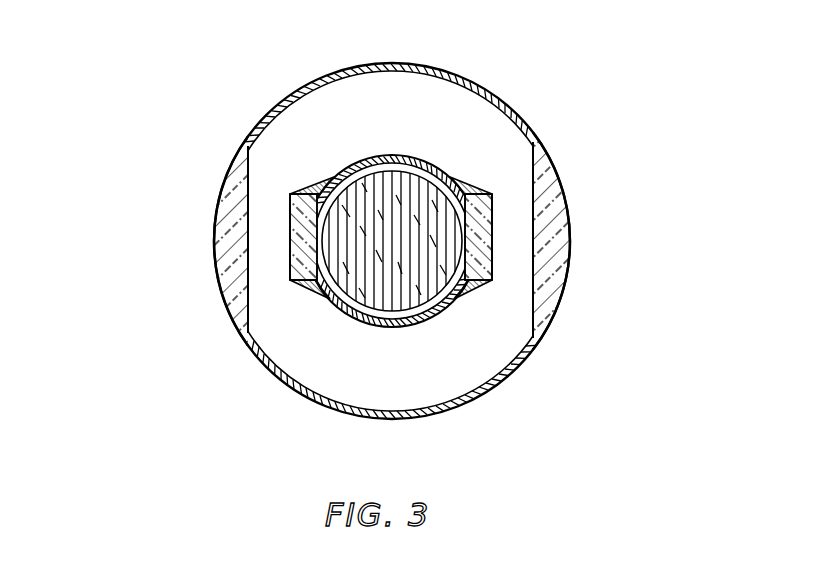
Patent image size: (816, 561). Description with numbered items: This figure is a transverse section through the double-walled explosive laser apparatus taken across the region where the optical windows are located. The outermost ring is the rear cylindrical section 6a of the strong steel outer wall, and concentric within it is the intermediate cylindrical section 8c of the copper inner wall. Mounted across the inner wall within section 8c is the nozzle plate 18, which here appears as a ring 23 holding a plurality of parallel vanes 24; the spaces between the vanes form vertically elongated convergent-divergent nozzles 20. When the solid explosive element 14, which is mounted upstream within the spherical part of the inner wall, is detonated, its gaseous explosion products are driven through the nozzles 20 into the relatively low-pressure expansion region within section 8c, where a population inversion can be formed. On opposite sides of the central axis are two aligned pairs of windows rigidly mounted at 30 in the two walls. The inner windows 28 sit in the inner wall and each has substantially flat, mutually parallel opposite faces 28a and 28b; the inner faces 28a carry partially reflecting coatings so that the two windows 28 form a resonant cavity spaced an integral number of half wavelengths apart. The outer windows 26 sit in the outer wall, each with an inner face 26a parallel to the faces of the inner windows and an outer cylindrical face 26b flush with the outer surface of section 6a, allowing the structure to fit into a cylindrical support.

The rear cylindrical section 6a is at (314, 76).
The solid explosive element 14 is at (374, 219).
The nozzle plate 18 is at (397, 330).
The convergent-divergent nozzle 20 is at (390, 176).
The ring 23 is at (376, 168).
The parallel vanes 24 is at (364, 322).
The intermediate cylindrical section 8c is at (424, 327).
The outer windows 26 is at (374, 259).
The inner face 26a is at (249, 150).
The outer cylindrical face 26b is at (230, 233).
The inner windows 28 is at (392, 255).
The inner face 28a is at (291, 204).
The outer face 28b is at (290, 281).
The window mounting 30 is at (322, 187).